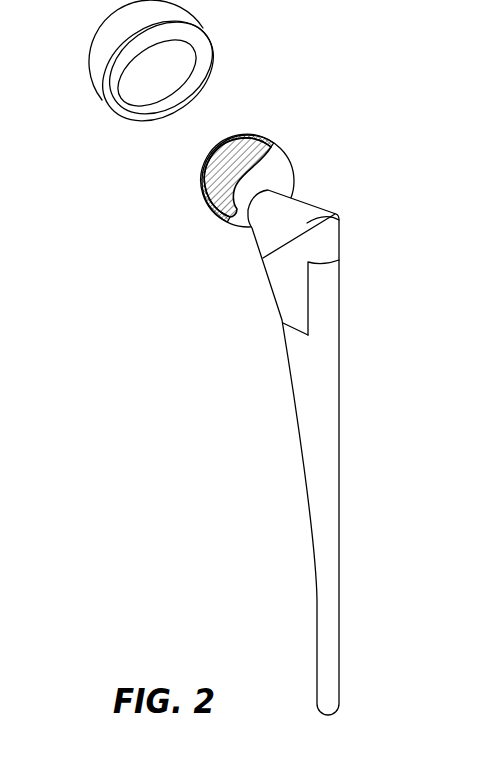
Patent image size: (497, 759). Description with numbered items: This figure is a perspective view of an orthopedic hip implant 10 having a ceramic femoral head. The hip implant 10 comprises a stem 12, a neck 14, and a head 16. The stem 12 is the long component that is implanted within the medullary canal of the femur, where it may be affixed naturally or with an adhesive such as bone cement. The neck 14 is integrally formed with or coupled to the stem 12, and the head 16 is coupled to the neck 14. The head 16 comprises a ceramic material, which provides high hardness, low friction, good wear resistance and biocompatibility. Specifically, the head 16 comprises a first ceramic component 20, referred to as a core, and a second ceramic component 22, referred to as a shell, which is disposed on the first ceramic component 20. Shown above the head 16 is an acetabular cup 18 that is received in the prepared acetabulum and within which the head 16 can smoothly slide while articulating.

The orthopedic hip implant 10 is at (366, 64).
The stem 12 is at (340, 460).
The neck 14 is at (302, 210).
The head 16 is at (288, 134).
The acetabular cup 18 is at (98, 31).
The first ceramic component 20 is at (228, 160).
The second ceramic component 22 is at (202, 178).